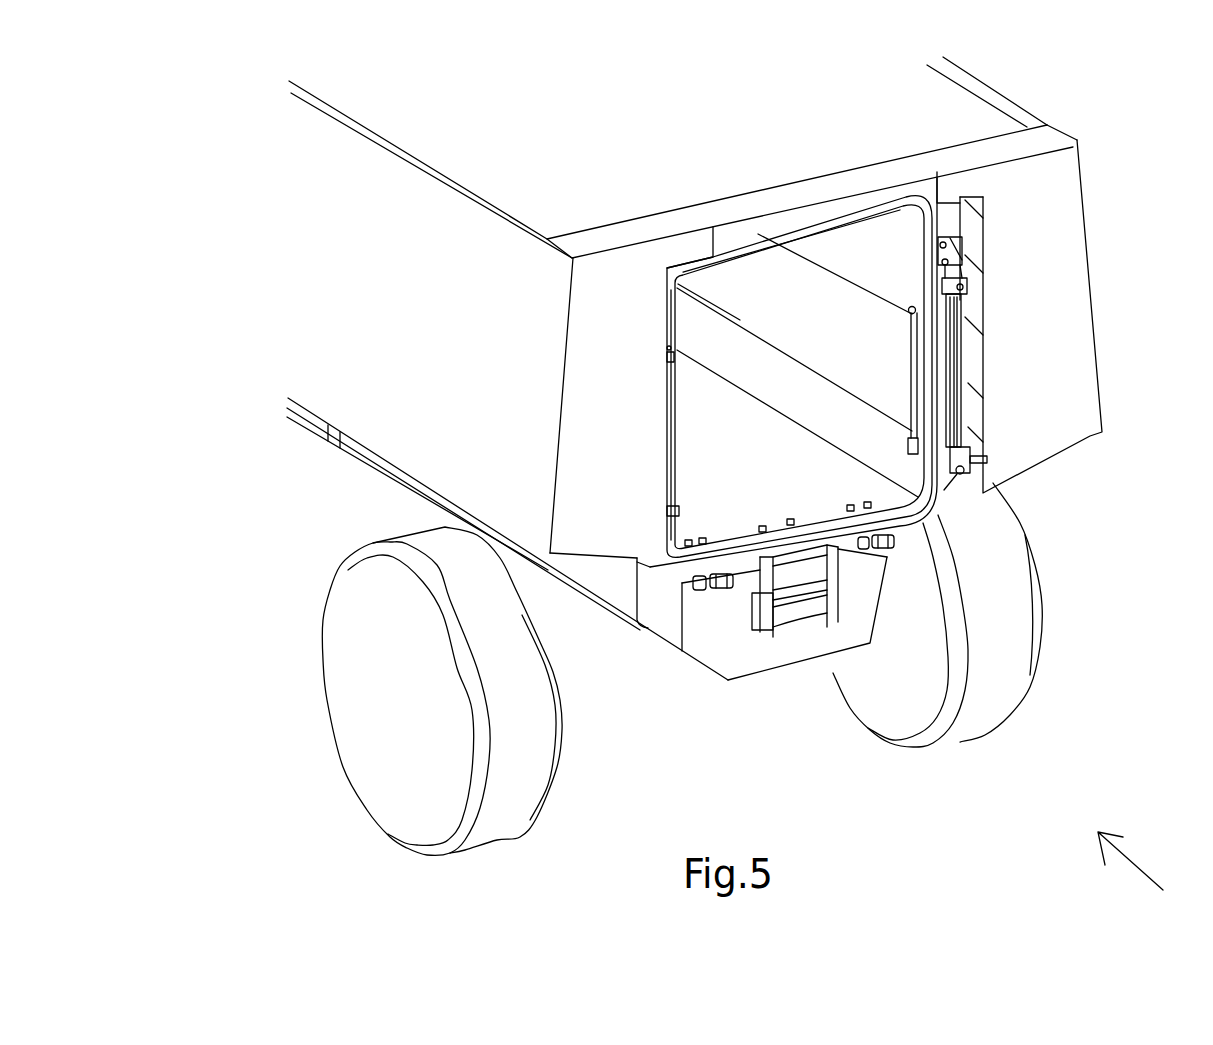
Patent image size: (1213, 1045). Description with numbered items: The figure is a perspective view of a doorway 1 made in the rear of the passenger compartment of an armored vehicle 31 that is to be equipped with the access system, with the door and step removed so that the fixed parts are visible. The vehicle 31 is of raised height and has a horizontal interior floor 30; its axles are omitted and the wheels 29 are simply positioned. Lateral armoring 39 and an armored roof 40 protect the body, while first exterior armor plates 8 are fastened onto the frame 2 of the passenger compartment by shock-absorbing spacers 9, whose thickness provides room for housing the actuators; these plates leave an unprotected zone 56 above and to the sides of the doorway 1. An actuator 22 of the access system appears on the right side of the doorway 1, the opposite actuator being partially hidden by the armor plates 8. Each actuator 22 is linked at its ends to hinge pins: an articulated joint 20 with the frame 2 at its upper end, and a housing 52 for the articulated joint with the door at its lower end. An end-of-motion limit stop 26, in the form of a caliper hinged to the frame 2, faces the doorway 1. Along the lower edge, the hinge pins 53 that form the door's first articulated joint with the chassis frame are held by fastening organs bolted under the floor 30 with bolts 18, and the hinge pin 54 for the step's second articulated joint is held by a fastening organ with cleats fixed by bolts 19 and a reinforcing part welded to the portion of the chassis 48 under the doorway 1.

The doorway 1 is at (803, 226).
The frame 2 is at (870, 194).
The first exterior armor plates 8 is at (595, 390).
The spacers 9 is at (985, 205).
The bolts 18 is at (703, 540).
The bolts 19 is at (790, 522).
The articulated joint 20 is at (965, 279).
The actuator 22 is at (962, 378).
The end-of-motion limit stop 26 is at (911, 373).
The wheels 29 is at (543, 770).
The floor 30 is at (748, 472).
The vehicle 31 is at (1144, 879).
The lateral armoring 39 is at (382, 307).
The armored roof 40 is at (538, 200).
The chassis 48 is at (798, 650).
The housing 52 is at (987, 460).
The hinge pins 53 is at (710, 590).
The hinge pin 54 is at (770, 633).
The unprotected zone 56 is at (678, 282).